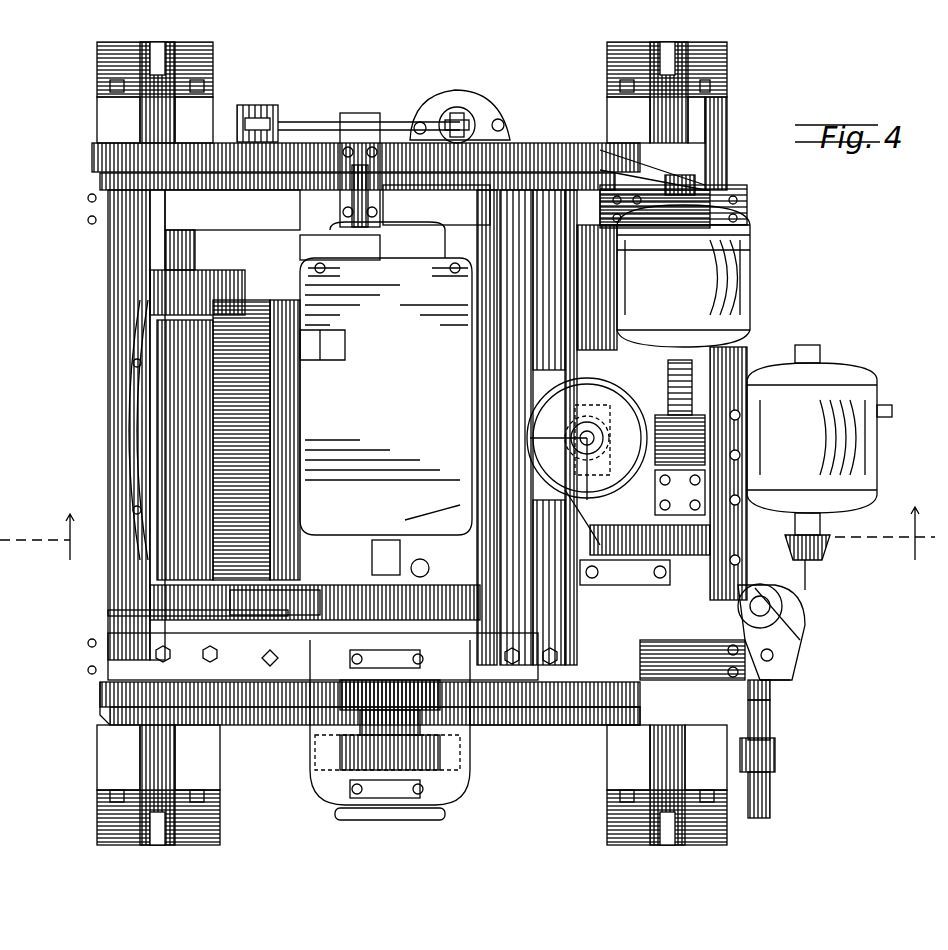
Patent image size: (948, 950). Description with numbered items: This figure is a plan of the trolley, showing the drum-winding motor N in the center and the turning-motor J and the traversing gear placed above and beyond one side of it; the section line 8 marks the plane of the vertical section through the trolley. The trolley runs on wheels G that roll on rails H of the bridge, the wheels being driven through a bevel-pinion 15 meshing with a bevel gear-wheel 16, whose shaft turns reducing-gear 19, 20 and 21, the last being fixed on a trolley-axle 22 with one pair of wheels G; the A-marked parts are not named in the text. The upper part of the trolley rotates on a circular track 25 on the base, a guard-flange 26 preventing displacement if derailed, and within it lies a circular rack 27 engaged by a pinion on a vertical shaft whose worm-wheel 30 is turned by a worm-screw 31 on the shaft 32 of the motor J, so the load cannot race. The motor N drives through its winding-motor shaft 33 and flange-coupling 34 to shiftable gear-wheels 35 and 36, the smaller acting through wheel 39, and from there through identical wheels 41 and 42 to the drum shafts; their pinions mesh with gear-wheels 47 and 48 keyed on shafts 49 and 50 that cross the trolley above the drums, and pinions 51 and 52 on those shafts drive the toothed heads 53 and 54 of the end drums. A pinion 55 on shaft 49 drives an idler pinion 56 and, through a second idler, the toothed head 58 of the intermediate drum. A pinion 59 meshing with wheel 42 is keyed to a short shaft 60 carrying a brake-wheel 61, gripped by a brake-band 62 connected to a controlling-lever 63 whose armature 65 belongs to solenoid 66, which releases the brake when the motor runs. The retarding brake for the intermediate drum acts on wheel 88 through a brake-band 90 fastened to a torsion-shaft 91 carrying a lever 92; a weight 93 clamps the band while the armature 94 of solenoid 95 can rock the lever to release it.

The gear-wheel 47 is at (92, 160).
The gear-wheel 48 is at (727, 160).
The weight 93 is at (262, 110).
The lever 92 is at (318, 122).
The solenoid 95 is at (462, 107).
The armature 94 is at (468, 120).
The torsion-shaft 91 is at (380, 185).
The wheel 88 is at (428, 235).
The brake-band 90 is at (340, 247).
The pinion 52 is at (735, 245).
The gear-wheel 54 is at (615, 300).
The pinion 51 is at (200, 292).
The gear-wheel 53 is at (125, 297).
The circular track 25 is at (133, 390).
The shaft 49 is at (200, 452).
The shaft 50 is at (520, 448).
The circular rack 27 is at (585, 530).
The worm-wheel 30 is at (640, 482).
The worm-screw 31 is at (705, 440).
The shaft 32 is at (690, 470).
The winding-motor shaft 33 is at (383, 540).
The flange-coupling 34 is at (402, 565).
The guard-flange 26 is at (597, 545).
The toothed head 58 is at (110, 585).
The transmitting pinion 56 is at (270, 598).
The pinion 55 is at (160, 615).
The gear-wheel 41 is at (140, 695).
The gear-wheel 35 is at (365, 700).
The gear-wheel 36 is at (380, 720).
The gear-wheel 39 is at (350, 750).
The gear-wheel 42 is at (540, 725).
The pinion 59 is at (545, 708).
The short shaft 60 is at (787, 668).
The brake-wheel 61 is at (782, 604).
The brake-band 62 is at (770, 612).
The controlling-lever 63 is at (800, 660).
The armature 65 is at (805, 640).
The solenoid 66 is at (805, 680).
The bevel-pinion 15 is at (833, 548).
The bevel gear-wheel 16 is at (795, 578).
The reducing-gear 20 is at (772, 690).
The reducing-gear 19 is at (772, 714).
The trolley-axle 22 is at (776, 755).
The gear-wheel 21 is at (770, 815).
The section line 8 is at (467, 533).
The standard A is at (97, 62).
The rails H is at (175, 48).
The wheels G is at (160, 112).
The turning-motor J is at (754, 359).
The drum-winding motor N is at (386, 378).